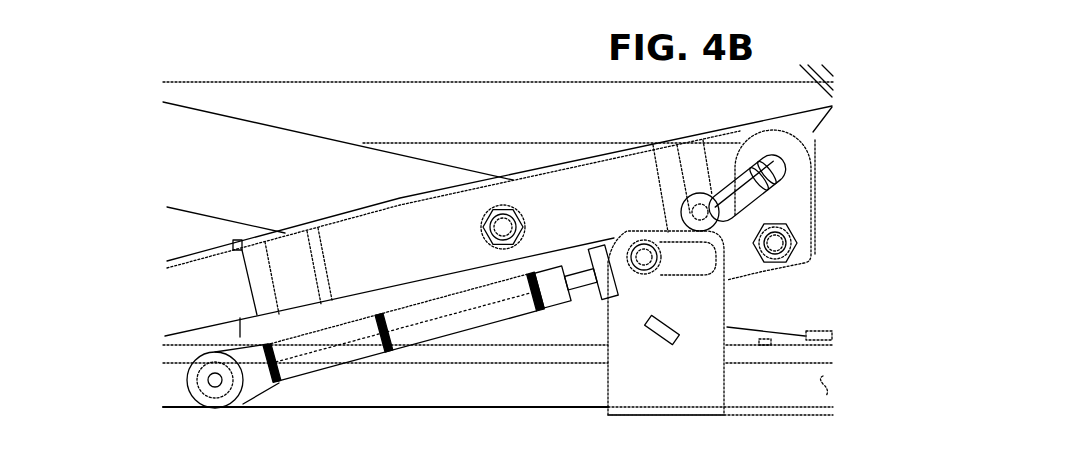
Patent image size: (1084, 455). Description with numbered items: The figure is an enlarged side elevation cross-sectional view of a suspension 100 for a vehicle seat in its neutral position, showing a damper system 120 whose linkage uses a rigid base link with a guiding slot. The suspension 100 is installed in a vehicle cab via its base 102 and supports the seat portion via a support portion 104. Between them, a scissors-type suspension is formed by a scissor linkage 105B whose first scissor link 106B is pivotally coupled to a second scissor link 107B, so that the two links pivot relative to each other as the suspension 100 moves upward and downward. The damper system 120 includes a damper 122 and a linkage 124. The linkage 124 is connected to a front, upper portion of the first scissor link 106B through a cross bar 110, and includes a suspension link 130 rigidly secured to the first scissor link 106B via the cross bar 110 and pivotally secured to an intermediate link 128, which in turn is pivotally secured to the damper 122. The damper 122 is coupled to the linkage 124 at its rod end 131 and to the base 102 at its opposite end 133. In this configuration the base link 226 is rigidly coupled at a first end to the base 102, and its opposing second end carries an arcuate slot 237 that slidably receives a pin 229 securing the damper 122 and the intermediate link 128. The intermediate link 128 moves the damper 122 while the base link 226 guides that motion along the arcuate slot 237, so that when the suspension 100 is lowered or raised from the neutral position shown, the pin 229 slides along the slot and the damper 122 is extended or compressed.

The suspension 100 is at (166, 40).
The base 102 is at (283, 408).
The support portion 104 is at (503, 80).
The scissor linkage 105B is at (300, 94).
The first scissor link 106B is at (570, 217).
The second scissor link 107B is at (188, 170).
The cross bar 110 is at (760, 173).
The damper system 120 is at (802, 196).
The damper 122 is at (352, 340).
The linkage 124 is at (779, 299).
The intermediate link 128 is at (743, 262).
The suspension link 130 is at (818, 200).
The rod end 131 is at (614, 258).
The opposite end 133 is at (212, 380).
The base link 226 is at (636, 276).
The pin 229 is at (644, 257).
The arcuate slot 237 is at (693, 280).